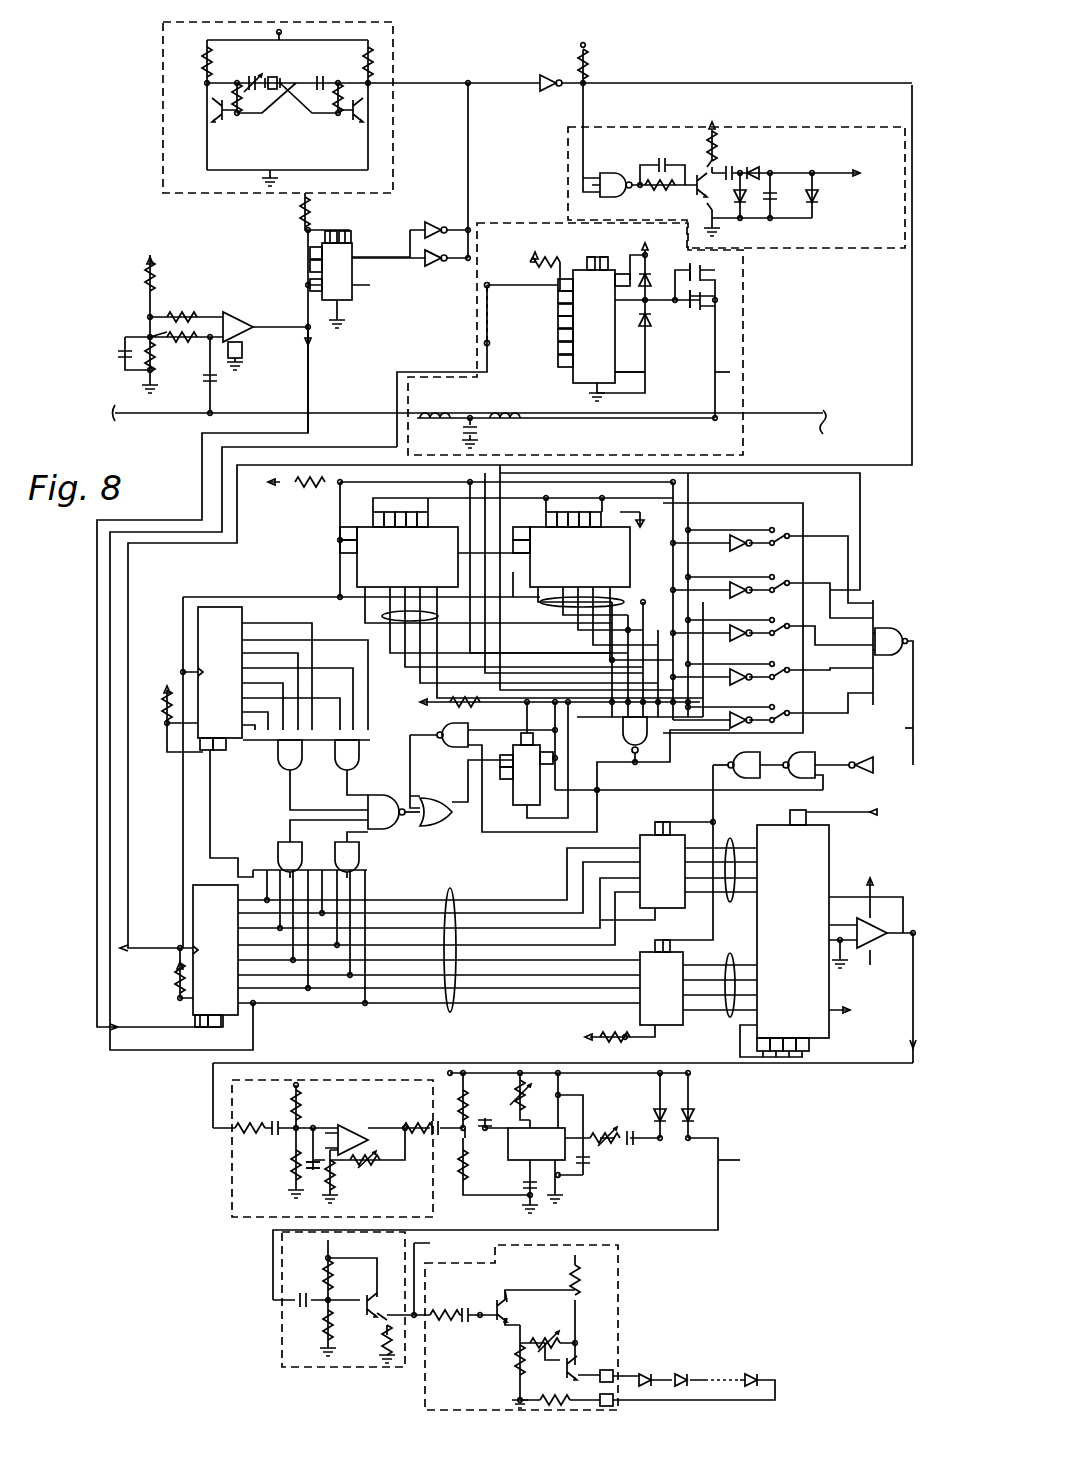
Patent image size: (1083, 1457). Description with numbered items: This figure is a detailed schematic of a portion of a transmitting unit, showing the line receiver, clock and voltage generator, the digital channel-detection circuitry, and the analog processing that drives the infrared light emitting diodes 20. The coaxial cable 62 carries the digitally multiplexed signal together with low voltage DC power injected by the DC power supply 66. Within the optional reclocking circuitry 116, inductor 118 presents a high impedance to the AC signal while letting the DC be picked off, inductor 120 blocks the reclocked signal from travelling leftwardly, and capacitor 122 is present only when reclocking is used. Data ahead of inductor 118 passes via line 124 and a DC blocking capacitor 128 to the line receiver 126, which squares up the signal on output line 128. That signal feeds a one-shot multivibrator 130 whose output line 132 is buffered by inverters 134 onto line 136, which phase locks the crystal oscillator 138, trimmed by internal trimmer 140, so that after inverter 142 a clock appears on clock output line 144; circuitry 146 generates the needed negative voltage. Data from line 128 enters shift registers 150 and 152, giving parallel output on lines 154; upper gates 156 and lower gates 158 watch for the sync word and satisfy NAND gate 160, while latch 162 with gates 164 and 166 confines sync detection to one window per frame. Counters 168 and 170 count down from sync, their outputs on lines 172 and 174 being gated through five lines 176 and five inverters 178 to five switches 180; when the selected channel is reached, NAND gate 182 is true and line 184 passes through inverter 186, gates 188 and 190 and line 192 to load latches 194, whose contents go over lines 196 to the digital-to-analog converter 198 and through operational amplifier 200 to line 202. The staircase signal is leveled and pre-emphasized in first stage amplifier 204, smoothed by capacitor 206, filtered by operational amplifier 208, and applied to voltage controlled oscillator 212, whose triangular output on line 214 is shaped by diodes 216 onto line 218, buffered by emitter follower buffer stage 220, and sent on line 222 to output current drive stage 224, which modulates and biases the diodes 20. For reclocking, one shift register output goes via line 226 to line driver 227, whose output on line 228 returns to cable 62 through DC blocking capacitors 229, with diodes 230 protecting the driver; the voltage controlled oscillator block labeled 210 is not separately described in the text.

The light emitting diodes 20 is at (750, 1372).
The coaxial cable 62 is at (186, 420).
The DC power supply 66 is at (143, 215).
The reclocking circuitry 116 is at (750, 330).
The inductor 118 is at (424, 412).
The inductor 120 is at (508, 410).
The capacitor 122 is at (478, 435).
The line 124 is at (214, 390).
The line receiver 126 is at (218, 312).
The output line 128 is at (275, 322).
The one-shot multivibrator 130 is at (352, 300).
The output line 132 is at (380, 252).
The inverters 134 is at (432, 248).
The line 136 is at (470, 149).
The crystal oscillator 138 is at (396, 44).
The internal trimmer 140 is at (258, 70).
The inverter 142 is at (548, 74).
The clock output line 144 is at (806, 84).
The negative voltage generating circuitry 146 is at (855, 128).
The shift register 150 is at (193, 902).
The shift register 152 is at (200, 752).
The lines 154 is at (452, 1012).
The upper gates 156 is at (278, 762).
The lower gates 158 is at (280, 846).
The NAND gate 160 is at (392, 818).
The latch 162 is at (513, 805).
The gate 164 is at (466, 748).
The gate 166 is at (448, 816).
The counter 168 is at (340, 535).
The counter 170 is at (631, 545).
The lines 172 is at (438, 618).
The lines 174 is at (542, 603).
The lines 176 is at (763, 530).
The inverters 178 is at (738, 532).
The switches 180 is at (790, 532).
The NAND gate 182 is at (895, 628).
The line 184 is at (912, 726).
The inverter 186 is at (865, 774).
The gate 188 is at (808, 753).
The gate 190 is at (760, 756).
The line 192 is at (714, 806).
The latches 194 is at (672, 912).
The lines 196 is at (732, 960).
The digital-to-analog converter 198 is at (830, 842).
The operational amplifier 200 is at (888, 928).
The line 202 is at (848, 1065).
The first stage amplifier 204 is at (232, 1176).
The capacitor 206 is at (316, 1156).
The operational amplifier 208 is at (362, 1132).
The voltage controlled oscillator 210 is at (598, 1130).
The voltage controlled oscillator 212 is at (570, 1165).
The output line 214 is at (605, 1136).
The diodes 216 is at (692, 1110).
The line 218 is at (720, 1186).
The emitter follower buffer stage 220 is at (282, 1334).
The line 222 is at (425, 1243).
The output current drive stage 224 is at (618, 1292).
The line 226 is at (445, 375).
The line driver 227 is at (648, 376).
The line 228 is at (730, 372).
The capacitors 229 is at (715, 298).
The diodes 230 is at (652, 285).